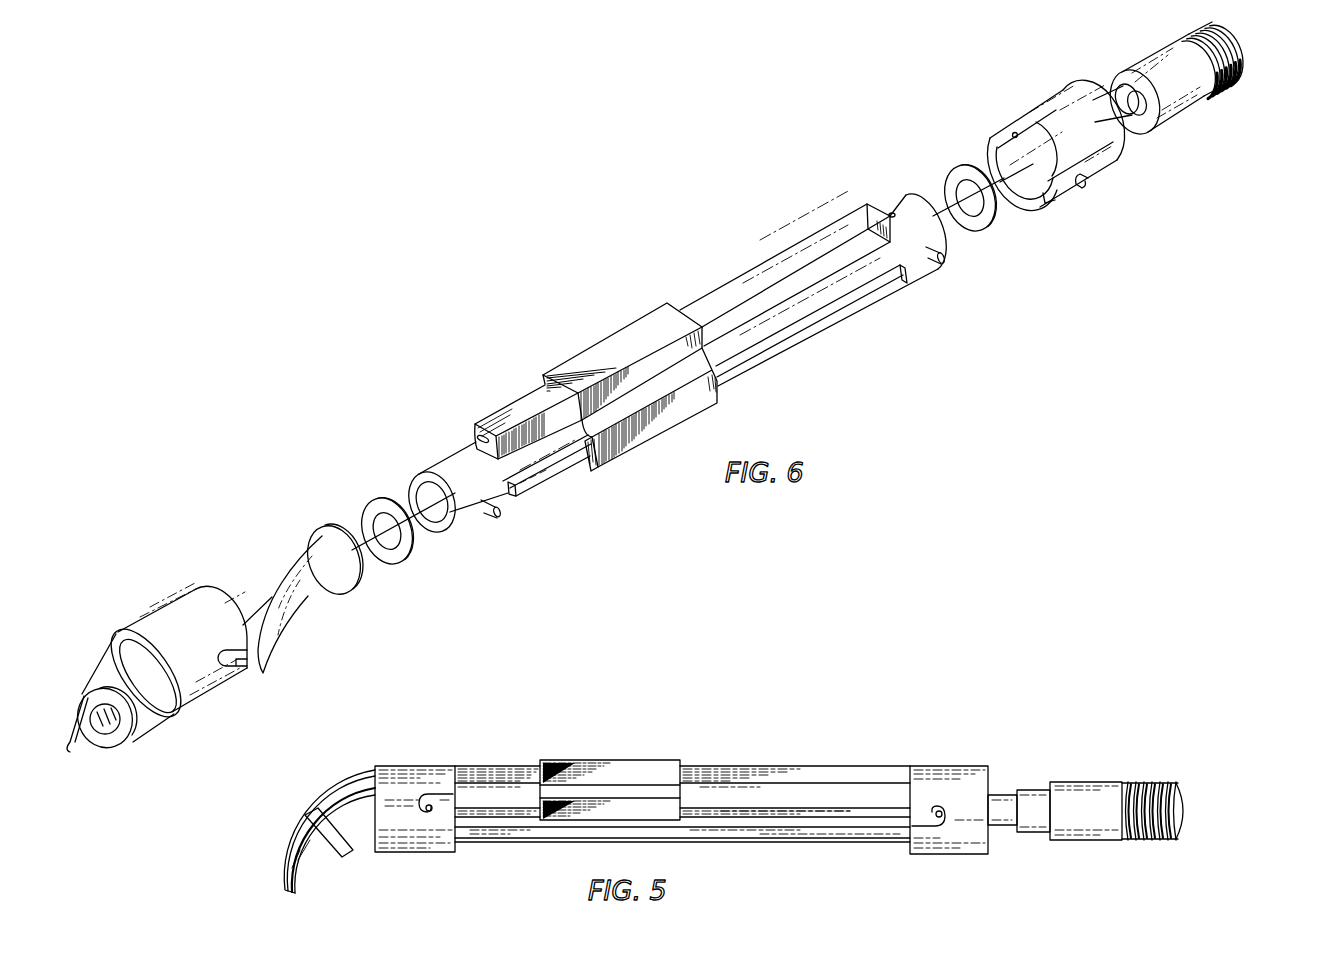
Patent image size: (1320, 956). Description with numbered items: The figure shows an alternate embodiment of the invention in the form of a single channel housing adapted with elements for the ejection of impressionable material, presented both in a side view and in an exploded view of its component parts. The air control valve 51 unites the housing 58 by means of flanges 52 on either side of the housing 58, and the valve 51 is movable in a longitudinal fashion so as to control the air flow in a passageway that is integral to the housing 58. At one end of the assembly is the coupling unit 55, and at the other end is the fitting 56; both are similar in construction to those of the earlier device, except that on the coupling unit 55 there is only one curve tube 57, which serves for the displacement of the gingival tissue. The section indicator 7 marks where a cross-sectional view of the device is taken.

In FIG. 6, the air control valve 51 is at (635, 333).
In FIG. 5, the air control valve 51 is at (610, 760).
In FIG. 6, the flanges 52 is at (513, 493).
In FIG. 5, the flanges 52 is at (767, 810).
In FIG. 6, the coupling unit 55 is at (162, 607).
In FIG. 5, the coupling unit 55 is at (350, 848).
In FIG. 6, the fitting 56 is at (1182, 123).
In FIG. 5, the fitting 56 is at (1082, 782).
In FIG. 6, the curve tube 57 is at (67, 738).
In FIG. 5, the curve tube 57 is at (295, 840).
In FIG. 6, the housing 58 is at (448, 455).
In FIG. 5, the housing 58 is at (727, 765).
In FIG. 6, the section line 7- 7 is at (100, 727).